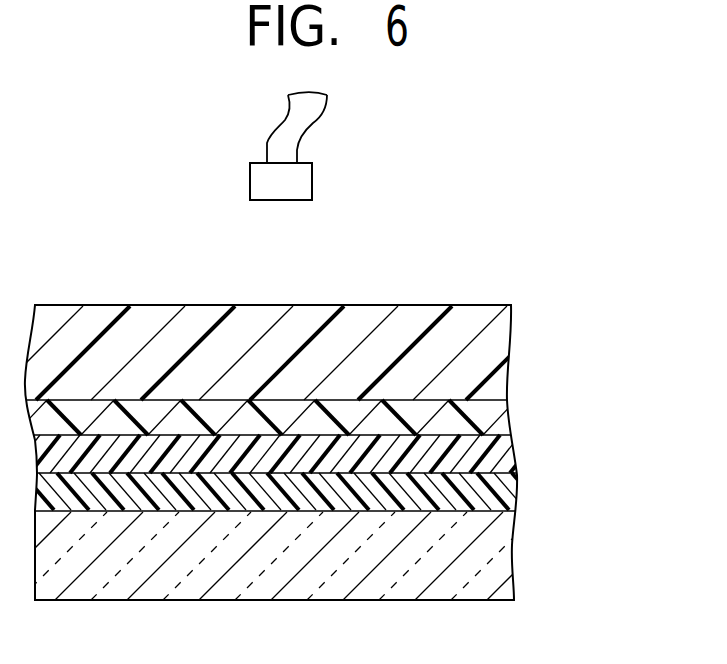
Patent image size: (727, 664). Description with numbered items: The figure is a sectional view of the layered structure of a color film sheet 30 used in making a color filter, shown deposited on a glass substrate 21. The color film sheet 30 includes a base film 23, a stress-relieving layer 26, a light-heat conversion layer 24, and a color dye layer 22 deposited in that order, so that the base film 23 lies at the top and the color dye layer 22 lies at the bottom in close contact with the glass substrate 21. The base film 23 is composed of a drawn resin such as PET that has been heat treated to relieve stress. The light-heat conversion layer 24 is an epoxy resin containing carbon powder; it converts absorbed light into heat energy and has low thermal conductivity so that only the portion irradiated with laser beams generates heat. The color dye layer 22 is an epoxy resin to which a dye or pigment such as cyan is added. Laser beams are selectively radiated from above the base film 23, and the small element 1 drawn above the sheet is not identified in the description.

The probe / sensor element 1 is at (292, 185).
The glass substrate 21 is at (502, 543).
The color dye layer 22 is at (517, 488).
The base film 23 is at (483, 353).
The light-heat conversion layer 24 is at (515, 452).
The stress-relieving layer 26 is at (498, 422).
The color film sheet 30 is at (615, 310).